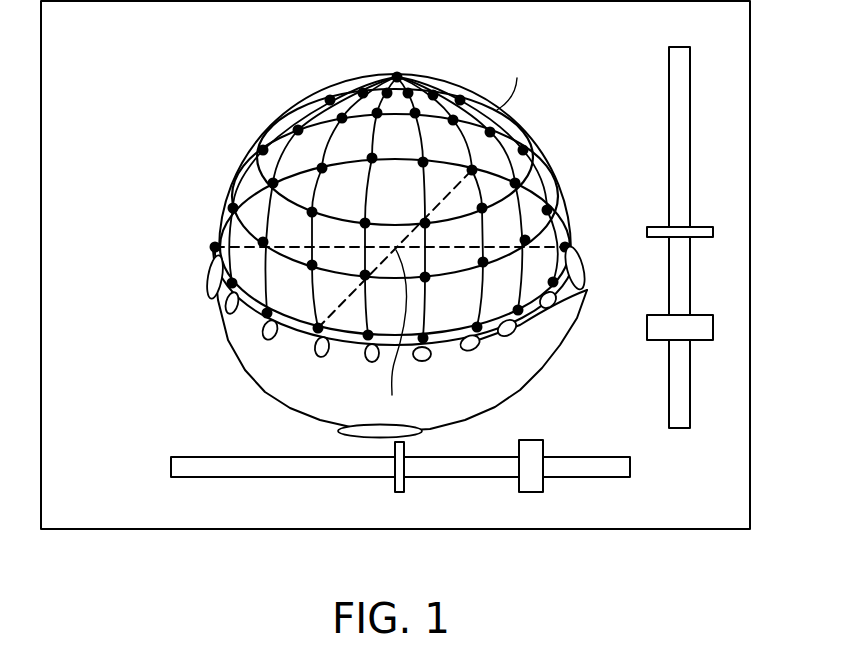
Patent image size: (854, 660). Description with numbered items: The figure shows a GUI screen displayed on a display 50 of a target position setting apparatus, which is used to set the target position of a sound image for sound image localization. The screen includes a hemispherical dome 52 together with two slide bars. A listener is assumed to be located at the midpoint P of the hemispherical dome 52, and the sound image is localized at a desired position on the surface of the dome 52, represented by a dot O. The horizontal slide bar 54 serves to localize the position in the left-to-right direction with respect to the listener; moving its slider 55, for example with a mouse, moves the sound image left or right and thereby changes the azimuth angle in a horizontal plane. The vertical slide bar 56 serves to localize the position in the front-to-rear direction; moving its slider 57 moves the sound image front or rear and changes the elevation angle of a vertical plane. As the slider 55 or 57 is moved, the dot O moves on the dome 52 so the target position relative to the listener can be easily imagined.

The display 50 is at (751, 122).
The hemispherical dome 52 is at (550, 115).
The slide bar 54 is at (465, 457).
The slider 55 is at (530, 440).
The slide bar 56 is at (669, 172).
The slider 57 is at (647, 314).